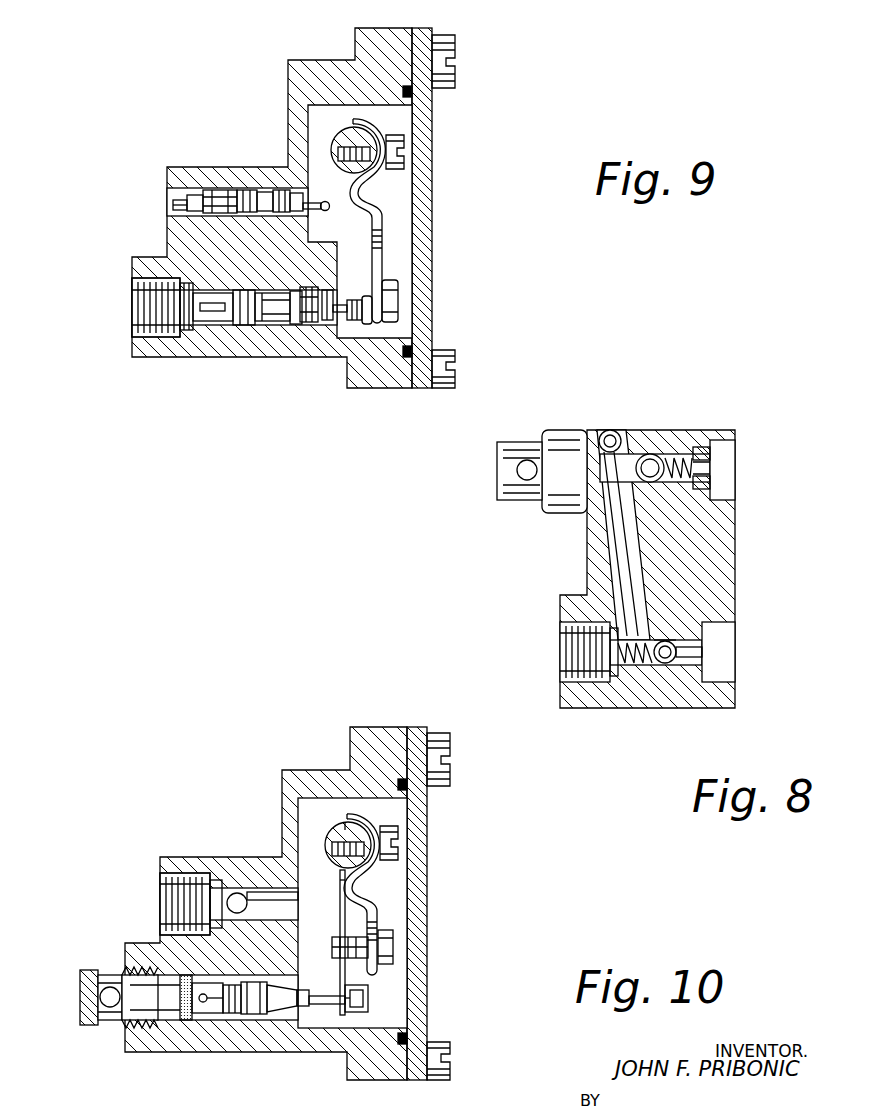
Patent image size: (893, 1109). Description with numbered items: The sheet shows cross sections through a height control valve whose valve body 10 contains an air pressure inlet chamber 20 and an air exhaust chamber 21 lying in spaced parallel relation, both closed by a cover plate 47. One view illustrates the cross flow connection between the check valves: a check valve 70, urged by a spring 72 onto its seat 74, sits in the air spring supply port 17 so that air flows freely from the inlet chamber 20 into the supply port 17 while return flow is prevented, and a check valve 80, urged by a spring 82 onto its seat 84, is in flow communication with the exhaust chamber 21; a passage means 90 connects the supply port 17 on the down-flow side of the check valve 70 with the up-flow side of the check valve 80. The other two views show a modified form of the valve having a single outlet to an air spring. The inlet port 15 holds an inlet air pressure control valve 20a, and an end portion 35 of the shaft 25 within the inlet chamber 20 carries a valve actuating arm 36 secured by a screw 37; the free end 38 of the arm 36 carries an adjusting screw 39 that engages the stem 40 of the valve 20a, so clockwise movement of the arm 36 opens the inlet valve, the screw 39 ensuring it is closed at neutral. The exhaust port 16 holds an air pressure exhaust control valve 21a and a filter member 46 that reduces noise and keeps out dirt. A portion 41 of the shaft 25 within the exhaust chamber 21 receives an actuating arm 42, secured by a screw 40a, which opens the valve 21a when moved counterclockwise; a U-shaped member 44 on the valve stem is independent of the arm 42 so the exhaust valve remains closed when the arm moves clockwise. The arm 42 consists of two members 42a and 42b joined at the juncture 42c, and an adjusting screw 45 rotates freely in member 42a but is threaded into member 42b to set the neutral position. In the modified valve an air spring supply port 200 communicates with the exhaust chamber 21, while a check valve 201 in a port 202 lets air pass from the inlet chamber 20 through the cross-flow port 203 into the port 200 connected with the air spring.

In FIG. 9, the valve body 10 is at (298, 62).
In FIG. 8, the valve body 10 is at (735, 555).
In FIG. 10, the valve body 10 is at (284, 770).
In FIG. 9, the inlet port 15 is at (152, 318).
In FIG. 8, the exhaust port 16 is at (500, 470).
In FIG. 10, the exhaust port 16 is at (97, 970).
In FIG. 8, the air spring supply port 17 is at (580, 665).
In FIG. 9, the inlet chamber 20 is at (394, 190).
In FIG. 8, the inlet chamber 20 is at (715, 652).
In FIG. 9, the inlet air pressure control valve 20a is at (286, 325).
In FIG. 8, the exhaust chamber 21 is at (722, 462).
In FIG. 10, the exhaust chamber 21 is at (392, 880).
In FIG. 10, the air pressure exhaust control valve 21a is at (283, 1010).
In FIG. 9, the shaft 25 is at (336, 136).
In FIG. 10, the shaft 25 is at (333, 838).
In FIG. 9, the end portion of shaft 35 is at (403, 172).
In FIG. 9, the valve actuating arm 36 is at (378, 247).
In FIG. 9, the screw 37 is at (405, 150).
In FIG. 9, the free end of arm 38 is at (400, 328).
In FIG. 9, the adjusting screw 39 is at (396, 300).
In FIG. 9, the stem 40 is at (349, 330).
In FIG. 10, the screw 40a is at (400, 836).
In FIG. 10, the shaft portion 41 is at (347, 822).
In FIG. 10, the actuating arm 42 is at (380, 923).
In FIG. 10, the arm member 42a is at (370, 957).
In FIG. 10, the arm member 42b is at (345, 977).
In FIG. 10, the juncture 42c is at (344, 903).
In FIG. 10, the U-shaped member 44 is at (370, 1005).
In FIG. 10, the adjusting screw 45 is at (395, 945).
In FIG. 10, the filter member 46 is at (190, 1020).
In FIG. 9, the cover plate 47 is at (423, 216).
In FIG. 10, the cover plate 47 is at (423, 890).
In FIG. 8, the check valve 70 is at (662, 663).
In FIG. 8, the spring 72 is at (638, 660).
In FIG. 8, the seat 74 is at (674, 647).
In FIG. 8, the check valve 80 is at (650, 454).
In FIG. 8, the spring 82 is at (680, 452).
In FIG. 8, the seat 84 is at (620, 434).
In FIG. 8, the passage means 90 is at (612, 545).
In FIG. 10, the air spring supply port 200 is at (172, 905).
In FIG. 9, the check valve 201 is at (248, 188).
In FIG. 9, the port 202 is at (176, 204).
In FIG. 10, the cross-flow port 203 is at (236, 892).